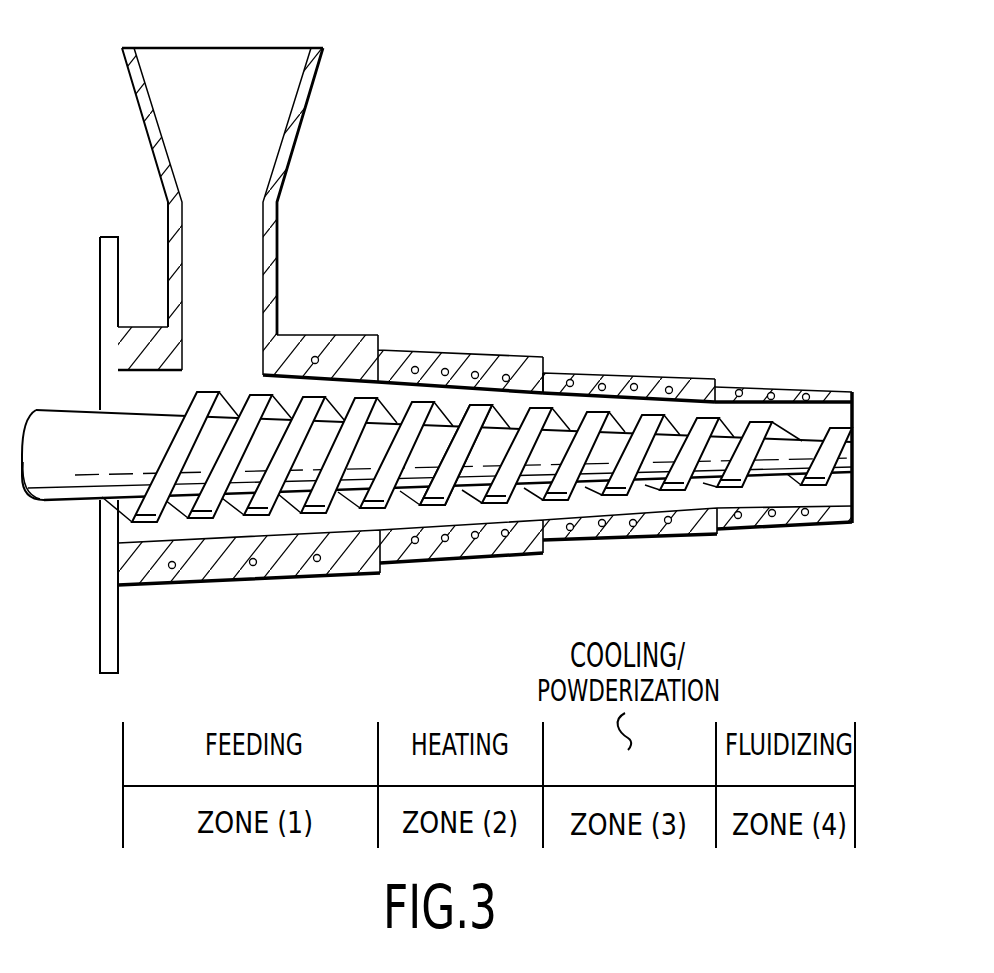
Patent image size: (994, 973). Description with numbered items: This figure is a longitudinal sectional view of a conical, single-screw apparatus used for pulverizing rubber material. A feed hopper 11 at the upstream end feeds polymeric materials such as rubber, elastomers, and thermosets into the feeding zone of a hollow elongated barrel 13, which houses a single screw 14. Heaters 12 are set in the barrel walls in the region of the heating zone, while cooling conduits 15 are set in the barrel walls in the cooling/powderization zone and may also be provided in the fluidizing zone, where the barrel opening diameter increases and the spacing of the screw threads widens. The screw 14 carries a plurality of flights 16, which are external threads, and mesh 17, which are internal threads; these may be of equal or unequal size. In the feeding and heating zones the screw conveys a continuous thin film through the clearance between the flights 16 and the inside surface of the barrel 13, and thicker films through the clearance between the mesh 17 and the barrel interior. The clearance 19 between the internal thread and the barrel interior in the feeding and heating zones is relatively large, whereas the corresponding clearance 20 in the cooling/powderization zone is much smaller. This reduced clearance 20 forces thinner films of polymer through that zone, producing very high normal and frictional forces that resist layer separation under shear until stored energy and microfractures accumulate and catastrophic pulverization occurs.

The feed hopper 11 is at (296, 153).
The heaters 12 is at (362, 342).
The barrel 13 is at (823, 392).
The screw 14 is at (396, 505).
The cooling conduits 15 is at (602, 527).
The flights 16 is at (600, 410).
The mesh 17 is at (282, 505).
The clearance 19 is at (467, 510).
The clearance 20 is at (523, 503).